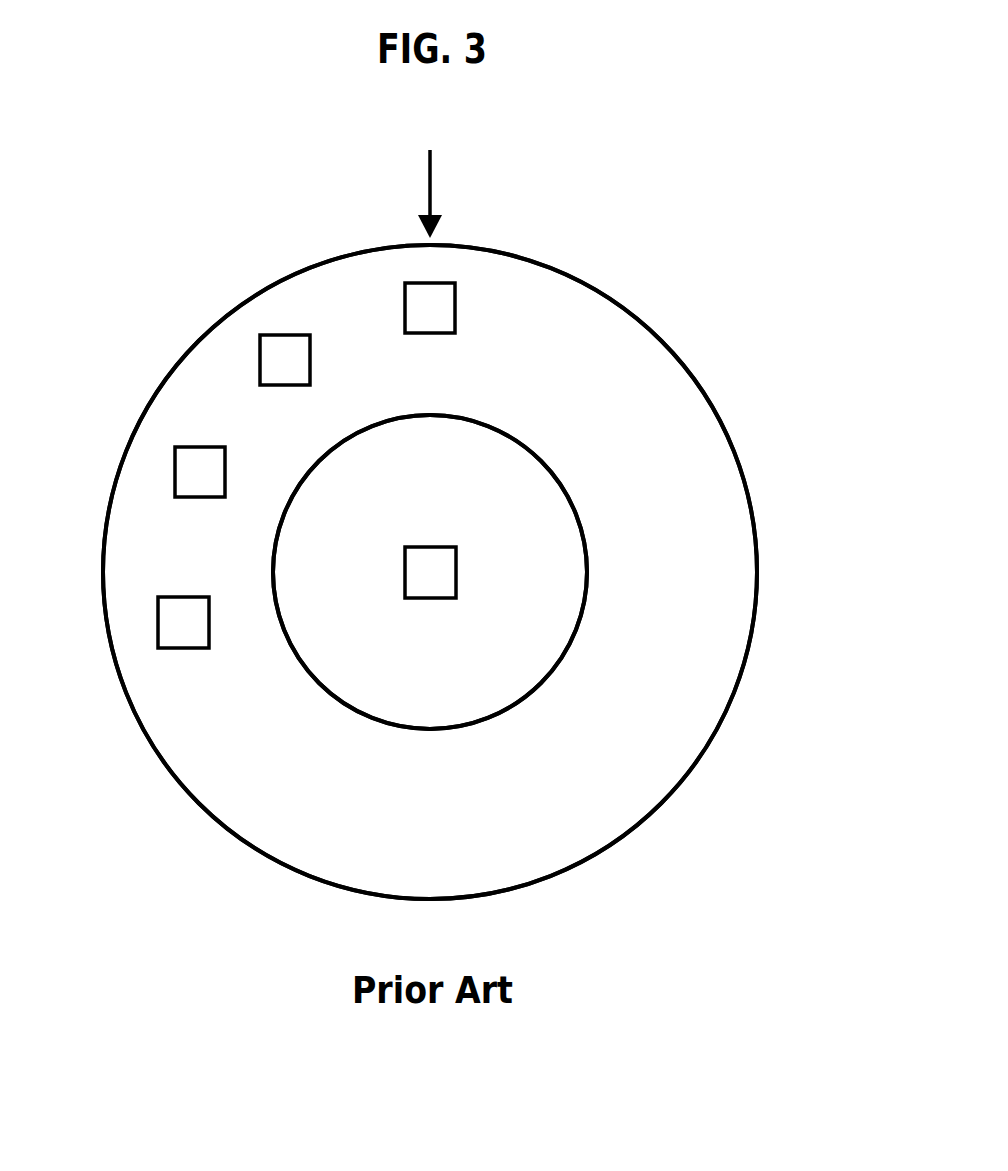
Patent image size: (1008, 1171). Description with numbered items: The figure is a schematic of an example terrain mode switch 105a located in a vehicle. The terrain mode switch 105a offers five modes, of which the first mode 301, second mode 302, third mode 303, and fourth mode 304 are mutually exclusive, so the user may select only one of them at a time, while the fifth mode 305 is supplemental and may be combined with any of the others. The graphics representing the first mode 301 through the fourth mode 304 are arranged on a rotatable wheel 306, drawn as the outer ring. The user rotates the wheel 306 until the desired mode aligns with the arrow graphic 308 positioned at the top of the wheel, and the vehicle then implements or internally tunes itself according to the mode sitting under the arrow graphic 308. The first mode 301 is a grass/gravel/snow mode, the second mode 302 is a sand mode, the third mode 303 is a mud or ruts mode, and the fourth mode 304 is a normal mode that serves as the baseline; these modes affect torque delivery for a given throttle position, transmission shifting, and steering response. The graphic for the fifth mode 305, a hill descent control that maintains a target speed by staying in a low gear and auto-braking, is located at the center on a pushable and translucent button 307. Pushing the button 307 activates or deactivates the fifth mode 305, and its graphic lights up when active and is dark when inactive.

The terrain mode switch 105a is at (818, 148).
The first mode 301 is at (457, 310).
The second mode 302 is at (260, 362).
The third mode 303 is at (175, 467).
The fourth mode 304 is at (158, 618).
The fifth mode 305 is at (405, 572).
The rotatable wheel 306 is at (778, 571).
The pushable and translucent button 307 is at (610, 571).
The arrow graphic 308 is at (428, 173).